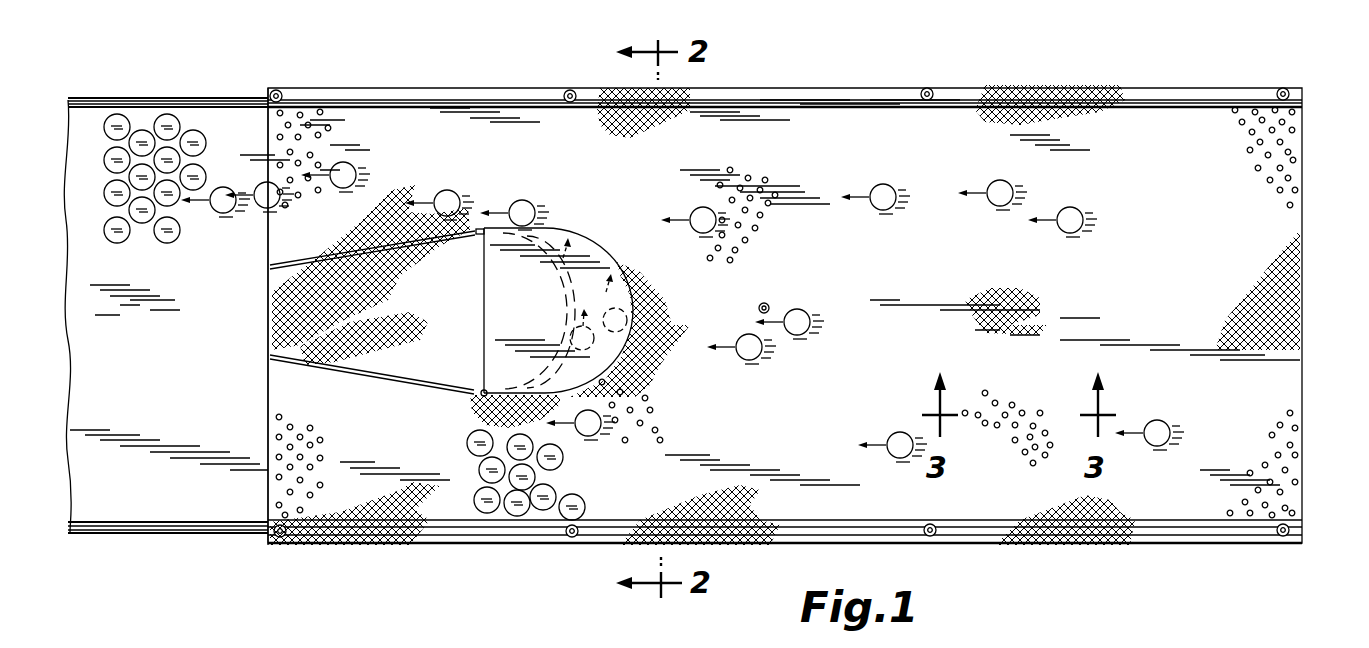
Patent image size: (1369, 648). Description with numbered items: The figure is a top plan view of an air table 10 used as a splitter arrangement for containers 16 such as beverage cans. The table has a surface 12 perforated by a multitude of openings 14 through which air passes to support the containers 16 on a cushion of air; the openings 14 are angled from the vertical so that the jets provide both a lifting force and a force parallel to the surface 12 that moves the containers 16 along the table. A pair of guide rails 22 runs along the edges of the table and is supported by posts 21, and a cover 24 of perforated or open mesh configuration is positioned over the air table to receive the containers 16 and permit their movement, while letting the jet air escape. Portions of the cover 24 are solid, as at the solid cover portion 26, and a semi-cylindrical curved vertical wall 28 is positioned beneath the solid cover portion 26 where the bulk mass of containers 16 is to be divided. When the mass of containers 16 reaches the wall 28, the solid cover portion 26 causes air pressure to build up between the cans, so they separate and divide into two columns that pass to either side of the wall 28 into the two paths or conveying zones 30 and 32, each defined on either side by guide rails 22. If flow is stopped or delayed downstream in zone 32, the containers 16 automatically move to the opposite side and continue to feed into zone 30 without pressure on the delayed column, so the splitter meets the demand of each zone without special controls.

The air table 10 is at (406, 84).
The surface 12 is at (1278, 386).
The openings 14 is at (1046, 412).
The containers 16 is at (1060, 214).
The posts 21 is at (930, 87).
The guide rails 22 is at (818, 108).
The cover 24 is at (1070, 100).
The solid cover portion 26 is at (590, 248).
The curved vertical wall 28 is at (555, 335).
The first conveying zone 30 is at (520, 188).
The second conveying zone 32 is at (446, 453).